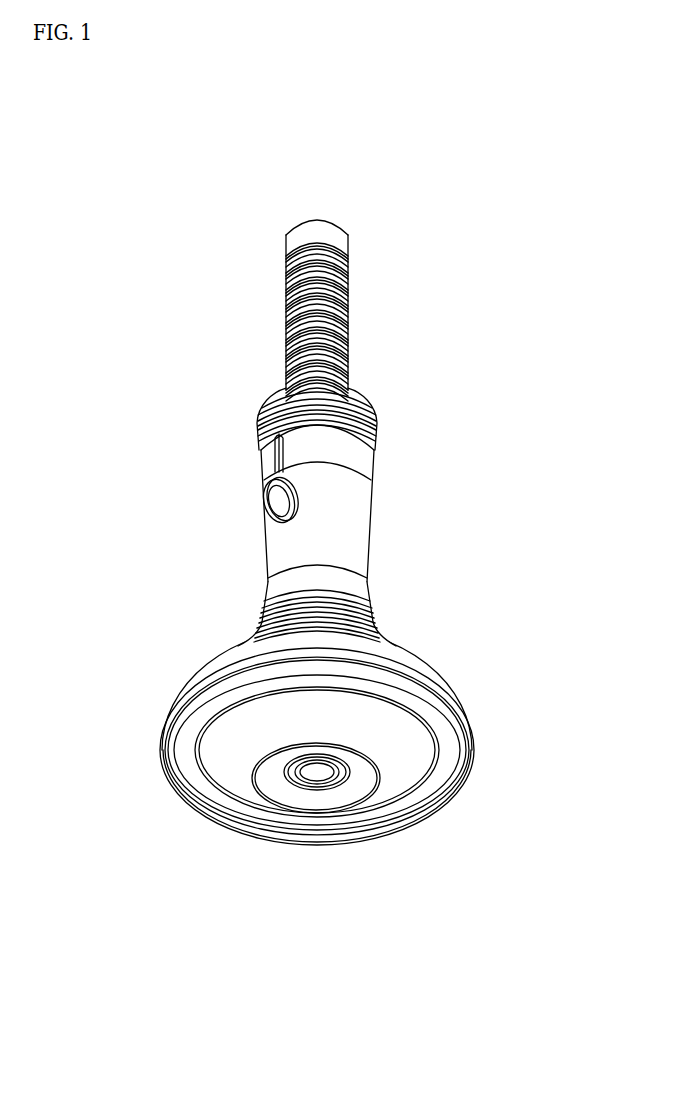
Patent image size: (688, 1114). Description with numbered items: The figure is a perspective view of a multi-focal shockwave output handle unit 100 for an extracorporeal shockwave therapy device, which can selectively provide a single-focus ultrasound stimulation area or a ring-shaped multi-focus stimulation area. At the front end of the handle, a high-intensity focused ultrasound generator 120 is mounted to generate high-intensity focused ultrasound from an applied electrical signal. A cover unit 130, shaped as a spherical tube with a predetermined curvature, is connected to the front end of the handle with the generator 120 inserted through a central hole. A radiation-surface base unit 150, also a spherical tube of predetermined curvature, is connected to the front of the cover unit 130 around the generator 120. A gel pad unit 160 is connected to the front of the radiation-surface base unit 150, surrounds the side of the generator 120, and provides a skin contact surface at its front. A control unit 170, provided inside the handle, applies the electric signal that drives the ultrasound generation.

The multi-focal shockwave output handle unit 100 is at (505, 223).
The high-intensity focused ultrasound generator 120 is at (316, 770).
The cover unit 130 is at (400, 655).
The radiation-surface base unit 150 is at (450, 742).
The gel pad unit 160 is at (408, 768).
The control unit 170 is at (273, 505).